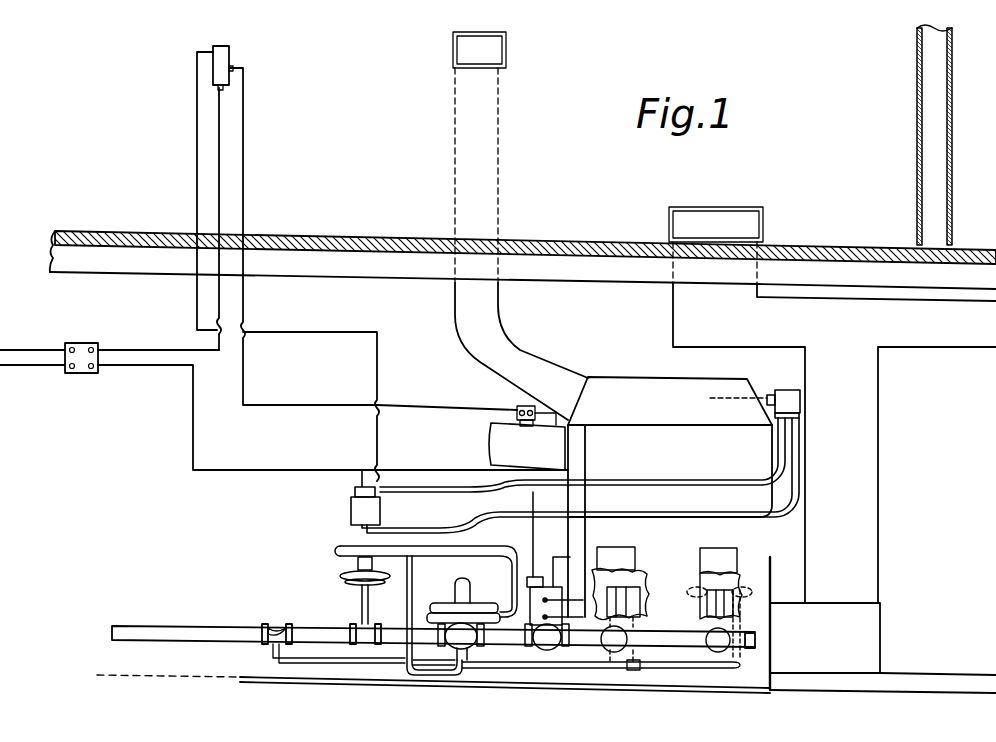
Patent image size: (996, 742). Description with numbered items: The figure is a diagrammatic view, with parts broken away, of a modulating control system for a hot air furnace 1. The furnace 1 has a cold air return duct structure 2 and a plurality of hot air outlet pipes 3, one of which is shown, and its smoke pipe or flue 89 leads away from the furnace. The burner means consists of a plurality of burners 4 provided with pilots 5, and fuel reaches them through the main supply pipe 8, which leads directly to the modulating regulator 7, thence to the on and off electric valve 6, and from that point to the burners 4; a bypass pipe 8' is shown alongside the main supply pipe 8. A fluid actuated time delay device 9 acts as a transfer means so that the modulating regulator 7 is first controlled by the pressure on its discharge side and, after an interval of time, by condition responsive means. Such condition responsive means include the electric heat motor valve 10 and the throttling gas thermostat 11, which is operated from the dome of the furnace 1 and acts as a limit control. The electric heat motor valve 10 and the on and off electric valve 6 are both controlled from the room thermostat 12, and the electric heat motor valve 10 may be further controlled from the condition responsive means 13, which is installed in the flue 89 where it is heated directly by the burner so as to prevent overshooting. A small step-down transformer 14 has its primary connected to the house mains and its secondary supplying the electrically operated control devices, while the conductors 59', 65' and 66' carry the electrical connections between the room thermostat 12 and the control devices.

The hot air furnace 1 is at (772, 557).
The cold air return duct structure 2 is at (866, 571).
The hot air outlet pipe 3 is at (540, 356).
The burner 4 is at (612, 585).
The pilot 5 is at (640, 604).
The on and off electric valve 6 is at (548, 648).
The modulating regulator 7 is at (465, 642).
The main supply pipe 8 is at (433, 617).
The bypass pipe 8' is at (506, 689).
The fluid actuated time delay device 9 is at (351, 582).
The electric heat motor valve 10 is at (350, 508).
The throttling gas thermostat 11 is at (790, 386).
The room thermostat 12 is at (220, 63).
The condition responsive means 13 is at (512, 407).
The step-down transformer 14 is at (84, 375).
The conductor 59' is at (185, 191).
The conductor 65' is at (254, 219).
The conductor 66' is at (304, 274).
The smoke pipe or flue 89 is at (485, 453).